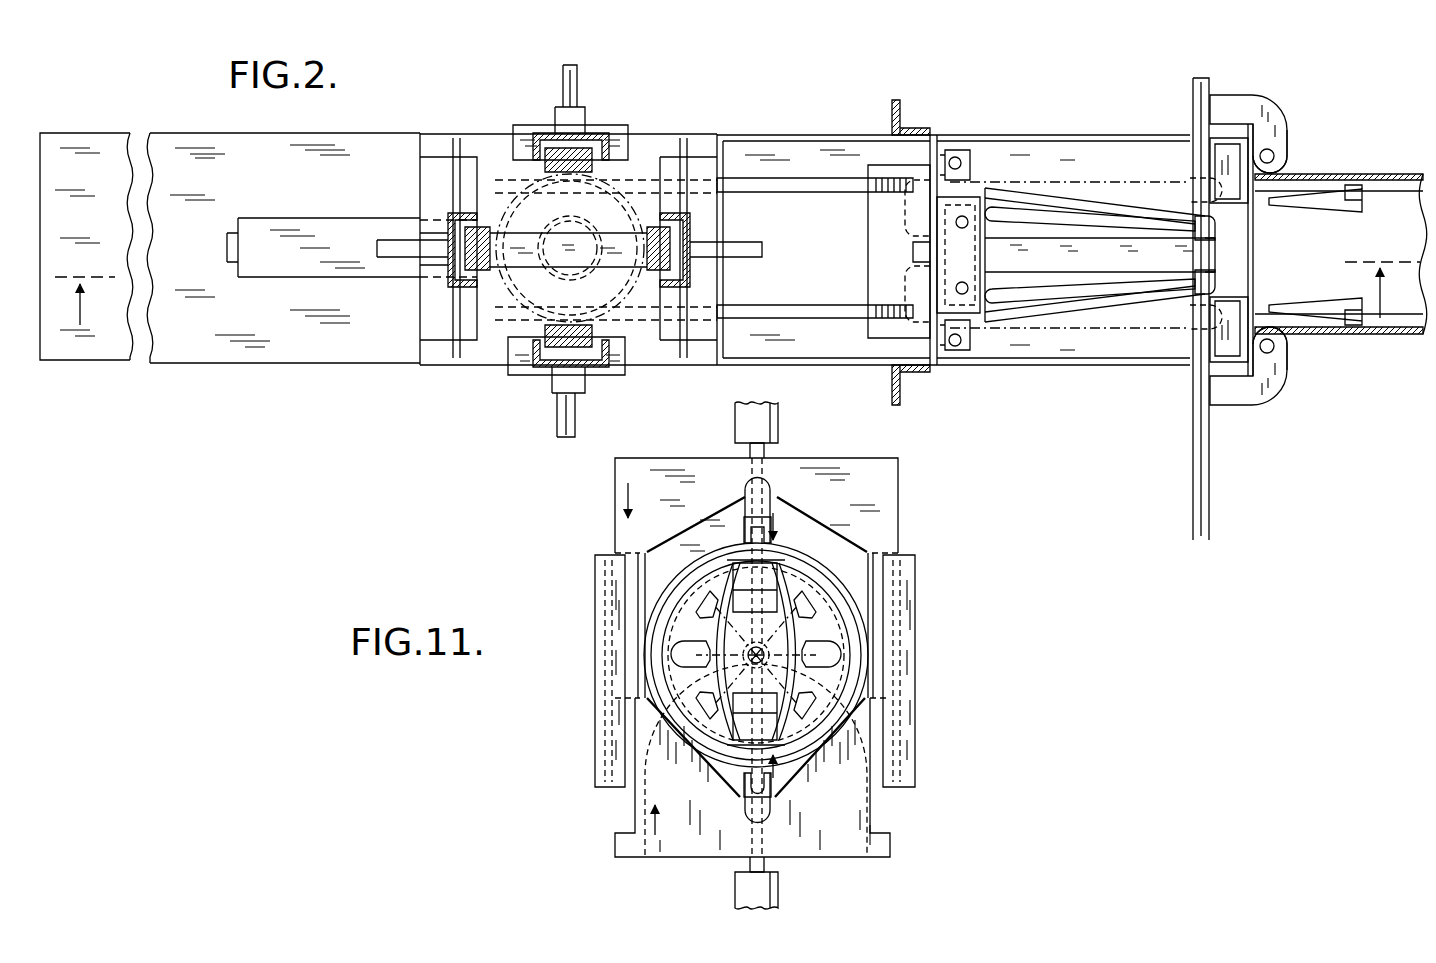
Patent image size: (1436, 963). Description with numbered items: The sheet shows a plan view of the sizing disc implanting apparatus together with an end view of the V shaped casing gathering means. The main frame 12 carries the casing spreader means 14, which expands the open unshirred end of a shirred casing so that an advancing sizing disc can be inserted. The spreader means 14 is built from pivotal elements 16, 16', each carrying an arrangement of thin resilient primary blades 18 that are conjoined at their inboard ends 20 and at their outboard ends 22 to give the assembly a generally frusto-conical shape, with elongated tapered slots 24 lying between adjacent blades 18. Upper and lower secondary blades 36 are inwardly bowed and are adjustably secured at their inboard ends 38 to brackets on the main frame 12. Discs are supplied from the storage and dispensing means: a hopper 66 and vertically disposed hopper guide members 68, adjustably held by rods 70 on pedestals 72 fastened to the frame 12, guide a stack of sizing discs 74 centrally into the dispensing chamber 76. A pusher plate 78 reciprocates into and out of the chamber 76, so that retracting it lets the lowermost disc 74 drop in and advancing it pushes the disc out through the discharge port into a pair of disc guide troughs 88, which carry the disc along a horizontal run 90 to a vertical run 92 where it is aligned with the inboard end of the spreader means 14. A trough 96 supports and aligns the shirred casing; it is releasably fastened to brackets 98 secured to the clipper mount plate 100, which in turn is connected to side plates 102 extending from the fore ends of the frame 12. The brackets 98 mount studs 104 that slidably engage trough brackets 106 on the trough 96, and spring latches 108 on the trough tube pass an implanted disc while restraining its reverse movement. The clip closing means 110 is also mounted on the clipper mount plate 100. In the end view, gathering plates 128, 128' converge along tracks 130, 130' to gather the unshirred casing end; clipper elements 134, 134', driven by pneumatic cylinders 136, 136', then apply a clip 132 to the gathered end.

In FIG. 2, the main frame 12 is at (320, 372).
In FIG. 2, the casing spreader means 14 is at (1077, 188).
In FIG. 11, the casing spreader means 14 is at (792, 585).
In FIG. 2, the pivotal element 16 is at (969, 361).
In FIG. 2, the pivotal element 16' is at (972, 134).
In FIG. 2, the primary blades 18 is at (1100, 193).
In FIG. 11, the primary blades 18 is at (682, 700).
In FIG. 2, the inboard ends 20 is at (926, 226).
In FIG. 2, the outboard ends 22 is at (1216, 231).
In FIG. 11, the outboard ends 22 is at (716, 690).
In FIG. 2, the elongated tapered slots 24 is at (1042, 212).
In FIG. 11, the elongated tapered slots 24 is at (690, 655).
In FIG. 2, the secondary blades 36 is at (1212, 256).
In FIG. 11, the secondary blades 36 is at (742, 586).
In FIG. 2, the inboard ends of secondary blades 38 is at (918, 250).
In FIG. 2, the hopper 66 is at (533, 120).
In FIG. 2, the hopper guide members 68 is at (568, 172).
In FIG. 2, the rods 70 is at (574, 78).
In FIG. 2, the pedestals 72 is at (592, 132).
In FIG. 2, the sizing discs 74 is at (505, 200).
In FIG. 2, the dispensing chamber 76 is at (530, 283).
In FIG. 2, the pusher plate 78 is at (306, 224).
In FIG. 2, the disc guide troughs 88 is at (818, 193).
In FIG. 2, the horizontal run 90 is at (643, 186).
In FIG. 2, the vertical run 92 is at (905, 310).
In FIG. 2, the trough 96 is at (1341, 254).
In FIG. 2, the brackets 98 is at (1243, 102).
In FIG. 2, the clipper mount plate 100 is at (1202, 283).
In FIG. 2, the side plates 102 is at (1186, 164).
In FIG. 2, the studs 104 is at (1275, 150).
In FIG. 2, the trough brackets 106 is at (1275, 157).
In FIG. 2, the spring latches 108 is at (1368, 190).
In FIG. 11, the clip closing means 110 is at (592, 766).
In FIG. 11, the gathering plate 128 is at (787, 657).
In FIG. 11, the gathering plate 128' is at (752, 780).
In FIG. 11, the track 130 is at (569, 671).
In FIG. 11, the track 130' is at (935, 671).
In FIG. 11, the clip 132 is at (746, 541).
In FIG. 11, the clipper element 134 is at (786, 511).
In FIG. 11, the clipper element 134' is at (799, 797).
In FIG. 11, the pneumatic cylinder 136 is at (786, 430).
In FIG. 11, the pneumatic cylinder 136' is at (789, 883).